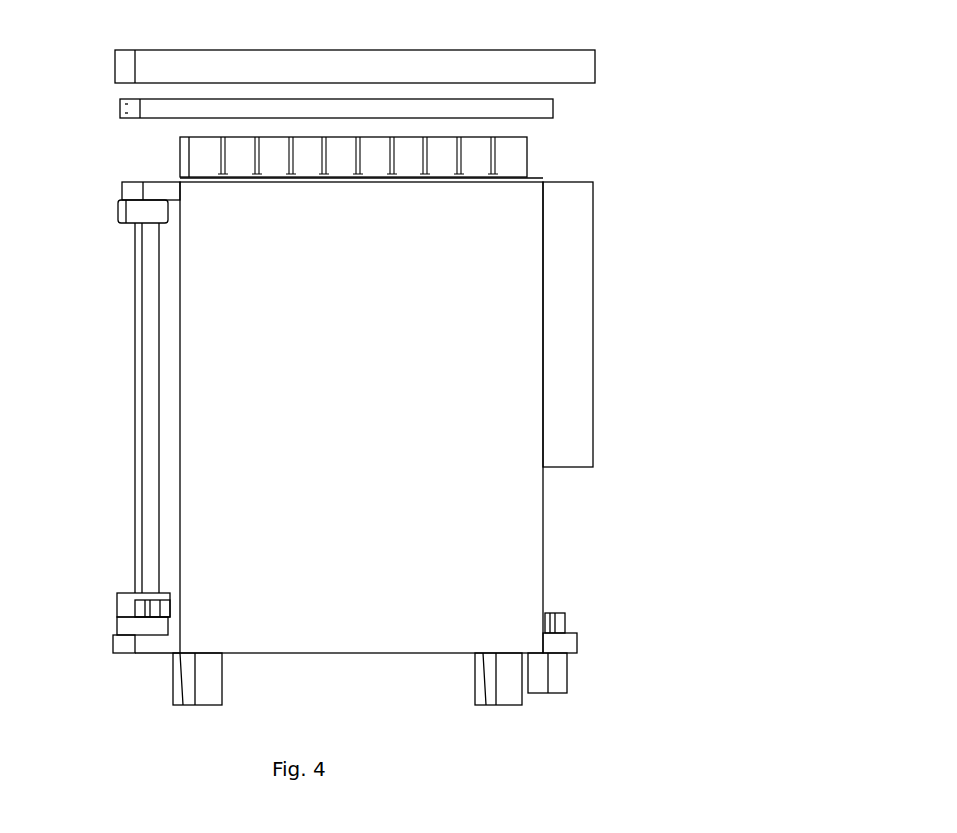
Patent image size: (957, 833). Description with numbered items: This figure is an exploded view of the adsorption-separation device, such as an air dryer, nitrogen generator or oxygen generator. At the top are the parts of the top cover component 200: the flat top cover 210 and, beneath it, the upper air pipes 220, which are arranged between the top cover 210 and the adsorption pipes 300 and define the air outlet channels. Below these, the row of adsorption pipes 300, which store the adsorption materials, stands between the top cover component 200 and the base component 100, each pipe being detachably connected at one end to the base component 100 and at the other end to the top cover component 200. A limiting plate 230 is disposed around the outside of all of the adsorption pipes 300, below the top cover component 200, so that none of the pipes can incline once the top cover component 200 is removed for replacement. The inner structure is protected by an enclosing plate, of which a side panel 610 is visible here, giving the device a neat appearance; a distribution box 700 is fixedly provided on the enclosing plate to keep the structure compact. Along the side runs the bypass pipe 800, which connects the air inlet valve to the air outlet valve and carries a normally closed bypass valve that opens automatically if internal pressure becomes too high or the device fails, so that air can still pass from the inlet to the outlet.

The base component 100 is at (428, 656).
The top cover component 200 is at (426, 65).
The top cover 210 is at (515, 62).
The upper air pipe 220 is at (385, 108).
The limiting plate 230 is at (125, 181).
The adsorption pipe 300 is at (205, 155).
The side panel 610 is at (445, 548).
The distribution box 700 is at (558, 443).
The bypass pipe 800 is at (135, 384).